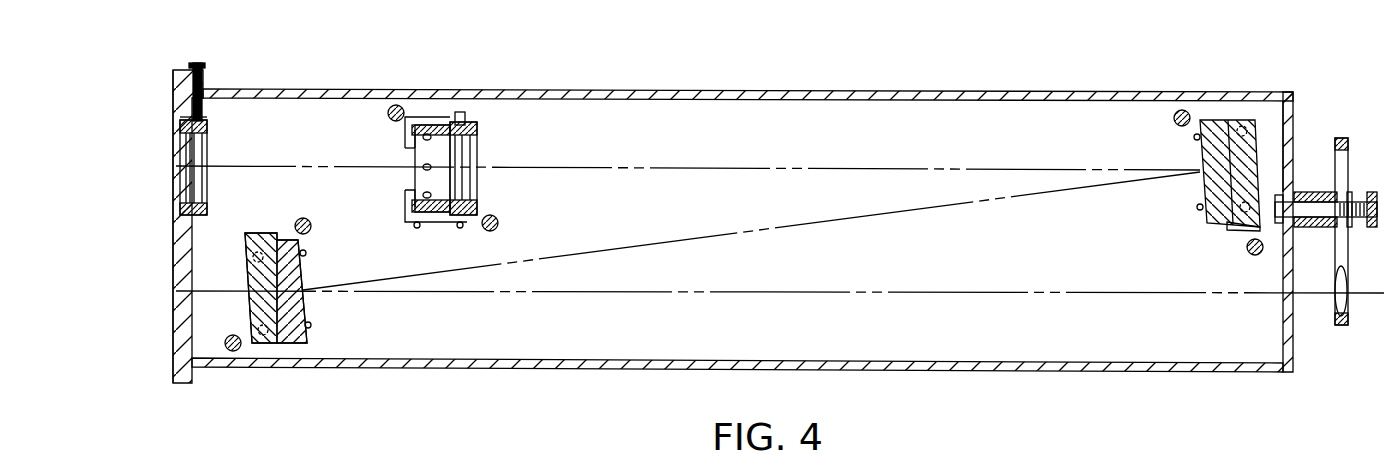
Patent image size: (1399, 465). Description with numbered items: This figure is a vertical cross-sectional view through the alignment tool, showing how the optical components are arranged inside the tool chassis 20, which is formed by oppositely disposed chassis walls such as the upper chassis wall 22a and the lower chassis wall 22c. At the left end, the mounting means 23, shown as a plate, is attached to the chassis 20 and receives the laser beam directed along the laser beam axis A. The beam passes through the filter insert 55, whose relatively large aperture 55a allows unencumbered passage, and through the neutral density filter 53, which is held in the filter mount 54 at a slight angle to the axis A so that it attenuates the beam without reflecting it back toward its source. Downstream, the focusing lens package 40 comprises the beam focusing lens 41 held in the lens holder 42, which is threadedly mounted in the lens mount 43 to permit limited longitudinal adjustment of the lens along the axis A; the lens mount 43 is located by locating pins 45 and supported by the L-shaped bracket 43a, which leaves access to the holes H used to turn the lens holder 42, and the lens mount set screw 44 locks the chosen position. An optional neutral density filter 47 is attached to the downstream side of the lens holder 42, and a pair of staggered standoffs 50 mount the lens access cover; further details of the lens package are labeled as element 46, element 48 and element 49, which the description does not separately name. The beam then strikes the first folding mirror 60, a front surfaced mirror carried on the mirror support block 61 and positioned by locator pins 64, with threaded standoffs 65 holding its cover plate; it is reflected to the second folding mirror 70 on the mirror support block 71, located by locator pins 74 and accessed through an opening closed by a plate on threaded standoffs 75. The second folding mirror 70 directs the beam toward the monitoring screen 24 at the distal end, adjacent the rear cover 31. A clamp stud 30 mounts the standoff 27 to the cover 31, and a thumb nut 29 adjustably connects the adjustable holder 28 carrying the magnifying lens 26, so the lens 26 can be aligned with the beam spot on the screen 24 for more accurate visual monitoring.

The tool chassis 20 is at (766, 231).
The chassis wall 22a is at (640, 97).
The chassis wall 22c is at (705, 368).
The mounting means 23 is at (203, 70).
The monitoring means or screen 24 is at (1293, 338).
The magnifying lens 26 is at (1343, 285).
The standoff 27 is at (1300, 192).
The adjustable holder 28 is at (1348, 250).
The thumb nut 29 is at (1369, 192).
The clamp stud 30 is at (1278, 224).
The cover 31 is at (1290, 117).
The focusing lens package 40 is at (485, 163).
The beam focusing lens 41 is at (476, 172).
The lens holder 42 is at (476, 129).
The lens mount 43 is at (447, 122).
The L-shaped bracket 43a is at (409, 220).
The lens mount set screw 44 is at (468, 122).
The locating pins 45 is at (418, 228).
The lens mount body 46 is at (453, 137).
The neutral density filter 47 is at (478, 155).
The retaining ring 48 is at (477, 192).
The adjustment direction arrow 49 is at (492, 119).
The staggered standoffs 50 is at (398, 105).
The neutral density filter 53 is at (188, 163).
The filter mount 54 is at (205, 140).
The filter insert 55 is at (207, 121).
The aperture 55a is at (200, 188).
The first folding mirror 60 is at (1222, 182).
The mirror support block 61 is at (1243, 160).
The locator pins 64 is at (1194, 137).
The threaded standoffs 65 is at (1182, 110).
The second folding mirror 70 is at (296, 289).
The mirror support block 71 is at (257, 281).
The locator pins 74 is at (306, 252).
The threaded standoffs 75 is at (305, 218).
The laser beam axis A is at (289, 163).
The holes H is at (423, 169).